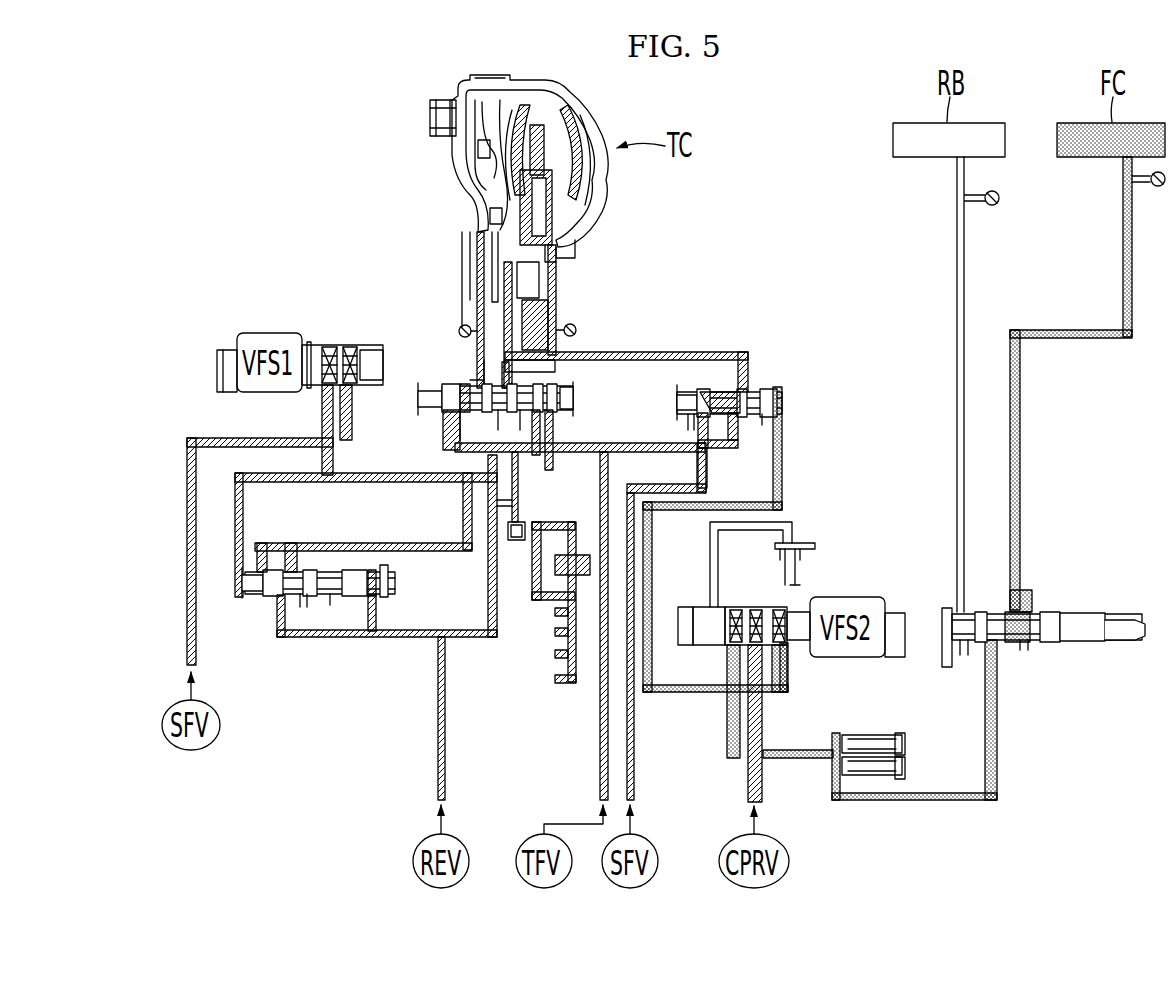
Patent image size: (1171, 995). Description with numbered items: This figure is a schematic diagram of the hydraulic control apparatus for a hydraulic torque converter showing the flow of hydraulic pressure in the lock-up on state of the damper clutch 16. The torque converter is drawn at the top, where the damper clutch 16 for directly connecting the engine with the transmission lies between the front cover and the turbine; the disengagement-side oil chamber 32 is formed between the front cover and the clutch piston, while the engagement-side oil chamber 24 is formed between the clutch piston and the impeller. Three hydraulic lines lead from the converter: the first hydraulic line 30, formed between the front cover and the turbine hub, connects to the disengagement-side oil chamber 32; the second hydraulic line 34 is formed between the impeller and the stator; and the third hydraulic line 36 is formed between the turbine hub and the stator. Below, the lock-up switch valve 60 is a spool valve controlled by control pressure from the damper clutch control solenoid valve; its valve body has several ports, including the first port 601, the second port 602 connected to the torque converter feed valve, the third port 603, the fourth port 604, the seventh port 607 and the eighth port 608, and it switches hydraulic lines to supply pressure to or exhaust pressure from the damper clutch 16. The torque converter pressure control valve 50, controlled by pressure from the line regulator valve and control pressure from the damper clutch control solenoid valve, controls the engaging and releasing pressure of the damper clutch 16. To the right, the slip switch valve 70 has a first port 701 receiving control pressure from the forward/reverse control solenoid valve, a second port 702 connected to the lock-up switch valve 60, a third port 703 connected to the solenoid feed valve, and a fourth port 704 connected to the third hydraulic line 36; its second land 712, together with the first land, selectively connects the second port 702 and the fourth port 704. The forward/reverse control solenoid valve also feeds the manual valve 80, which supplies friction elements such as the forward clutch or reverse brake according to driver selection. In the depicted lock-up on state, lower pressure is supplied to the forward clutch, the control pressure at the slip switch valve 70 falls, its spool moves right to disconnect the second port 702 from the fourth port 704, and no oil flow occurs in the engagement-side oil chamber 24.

The damper clutch 16 is at (493, 102).
The engagement-side oil chamber 24 is at (548, 138).
The disengagement-side oil chamber 32 is at (452, 196).
The first hydraulic line 30 is at (478, 268).
The third hydraulic line 36 is at (505, 315).
The second hydraulic line 34 is at (553, 322).
The lock-up switch valve 60 is at (592, 384).
The first port 601 is at (567, 442).
The second port 602 is at (537, 432).
The third port 603 is at (488, 440).
The fourth port 604 is at (490, 413).
The seventh port 607 is at (480, 384).
The eighth port 608 is at (503, 378).
The slip switch valve 70 is at (776, 370).
The first port 701 is at (780, 420).
The second port 702 is at (735, 435).
The third port 703 is at (705, 432).
The fourth port 704 is at (742, 385).
The second land 712 is at (732, 390).
The torque converter pressure control valve 50 is at (258, 612).
The manual valve 80 is at (1075, 592).